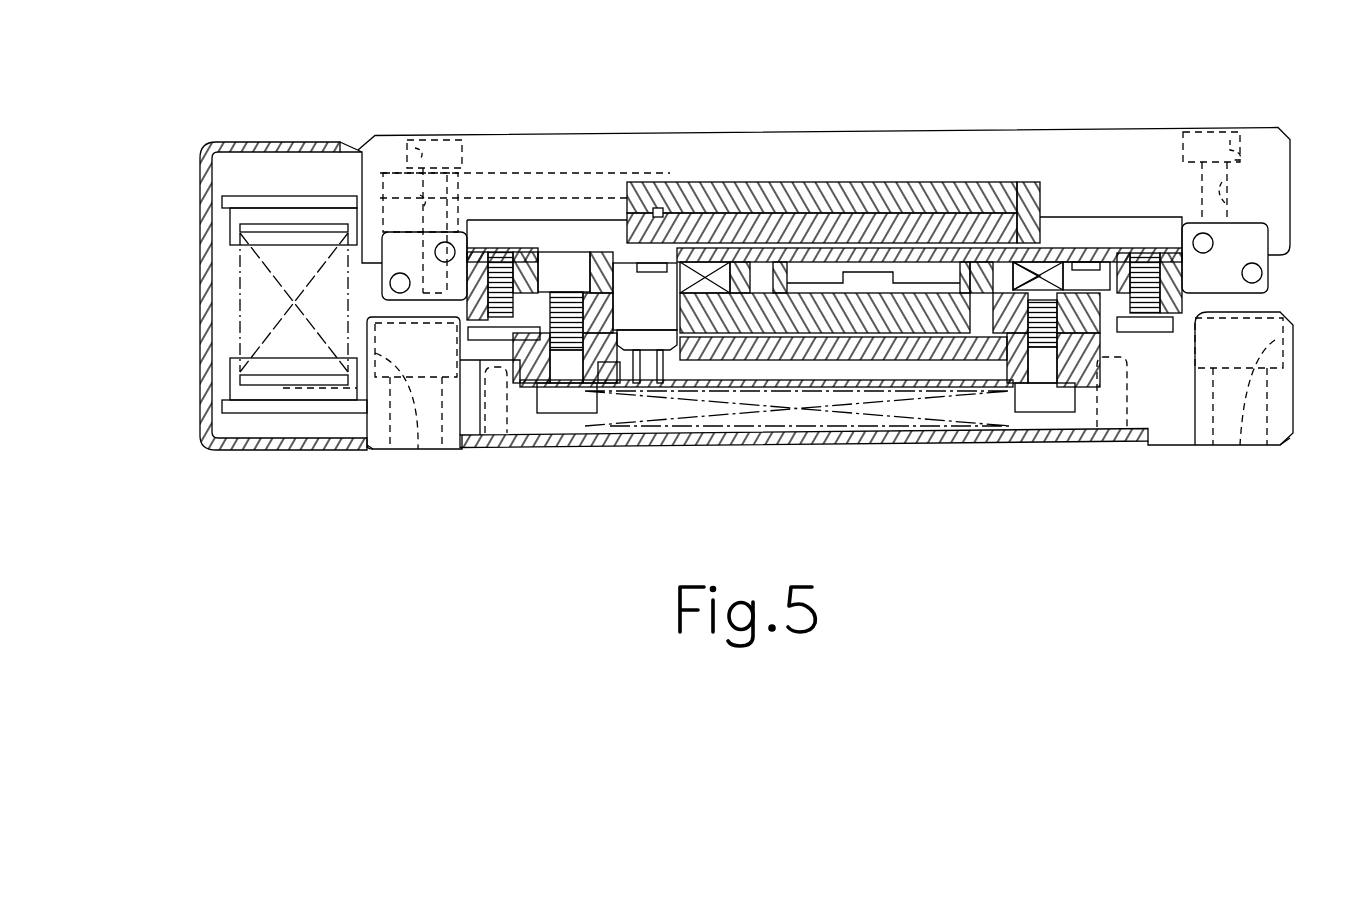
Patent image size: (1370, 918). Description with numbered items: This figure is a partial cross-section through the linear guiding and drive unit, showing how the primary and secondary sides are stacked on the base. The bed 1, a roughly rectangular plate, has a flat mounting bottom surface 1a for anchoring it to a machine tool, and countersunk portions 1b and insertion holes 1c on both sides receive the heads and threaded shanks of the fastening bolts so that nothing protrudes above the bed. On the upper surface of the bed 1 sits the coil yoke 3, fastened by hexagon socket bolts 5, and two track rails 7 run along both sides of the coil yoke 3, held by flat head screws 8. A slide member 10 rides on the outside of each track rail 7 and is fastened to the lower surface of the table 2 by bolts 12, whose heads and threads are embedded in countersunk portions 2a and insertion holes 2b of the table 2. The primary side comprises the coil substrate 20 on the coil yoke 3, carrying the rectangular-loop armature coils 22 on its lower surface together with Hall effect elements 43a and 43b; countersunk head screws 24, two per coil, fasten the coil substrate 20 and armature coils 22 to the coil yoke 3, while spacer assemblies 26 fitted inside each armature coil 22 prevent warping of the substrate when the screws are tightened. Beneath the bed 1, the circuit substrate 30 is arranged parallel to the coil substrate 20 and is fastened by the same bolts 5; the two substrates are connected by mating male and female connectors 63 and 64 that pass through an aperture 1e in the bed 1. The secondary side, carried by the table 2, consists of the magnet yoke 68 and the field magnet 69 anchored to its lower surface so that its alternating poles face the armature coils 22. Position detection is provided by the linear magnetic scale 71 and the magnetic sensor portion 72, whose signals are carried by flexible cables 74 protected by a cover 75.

The bed 1 is at (1295, 388).
The flat mounting bottom surface 1a is at (375, 452).
The countersunk portions 1b is at (410, 452).
The insertion holes 1c is at (390, 455).
The aperture 1e is at (612, 385).
The table 2 is at (1278, 129).
The countersunk portions 2a is at (413, 140).
The insertion holes 2b is at (370, 140).
The coil yoke 3 is at (923, 318).
The bolts 5 is at (555, 398).
The track rails 7 is at (498, 262).
The flat head screws 8 is at (493, 333).
The slide member 10 is at (381, 282).
The bolts 12 is at (430, 140).
The coil substrate 20 is at (612, 242).
The armature coils 22 is at (1043, 262).
The countersunk head screws 24 is at (730, 262).
The spacer assemblies 26 is at (808, 279).
The circuit substrate 30 is at (791, 390).
The Hall effect elements 43a is at (1097, 262).
The Hall effect elements 43b is at (643, 253).
The male connector 63 is at (643, 313).
The female connector 64 is at (670, 345).
The magnet yoke 68 is at (930, 225).
The field magnet 69 is at (878, 212).
The linear magnetic scale 71 is at (557, 262).
The magnetic sensor portion 72 is at (590, 233).
The cables 74 is at (255, 320).
The cover 75 is at (215, 198).